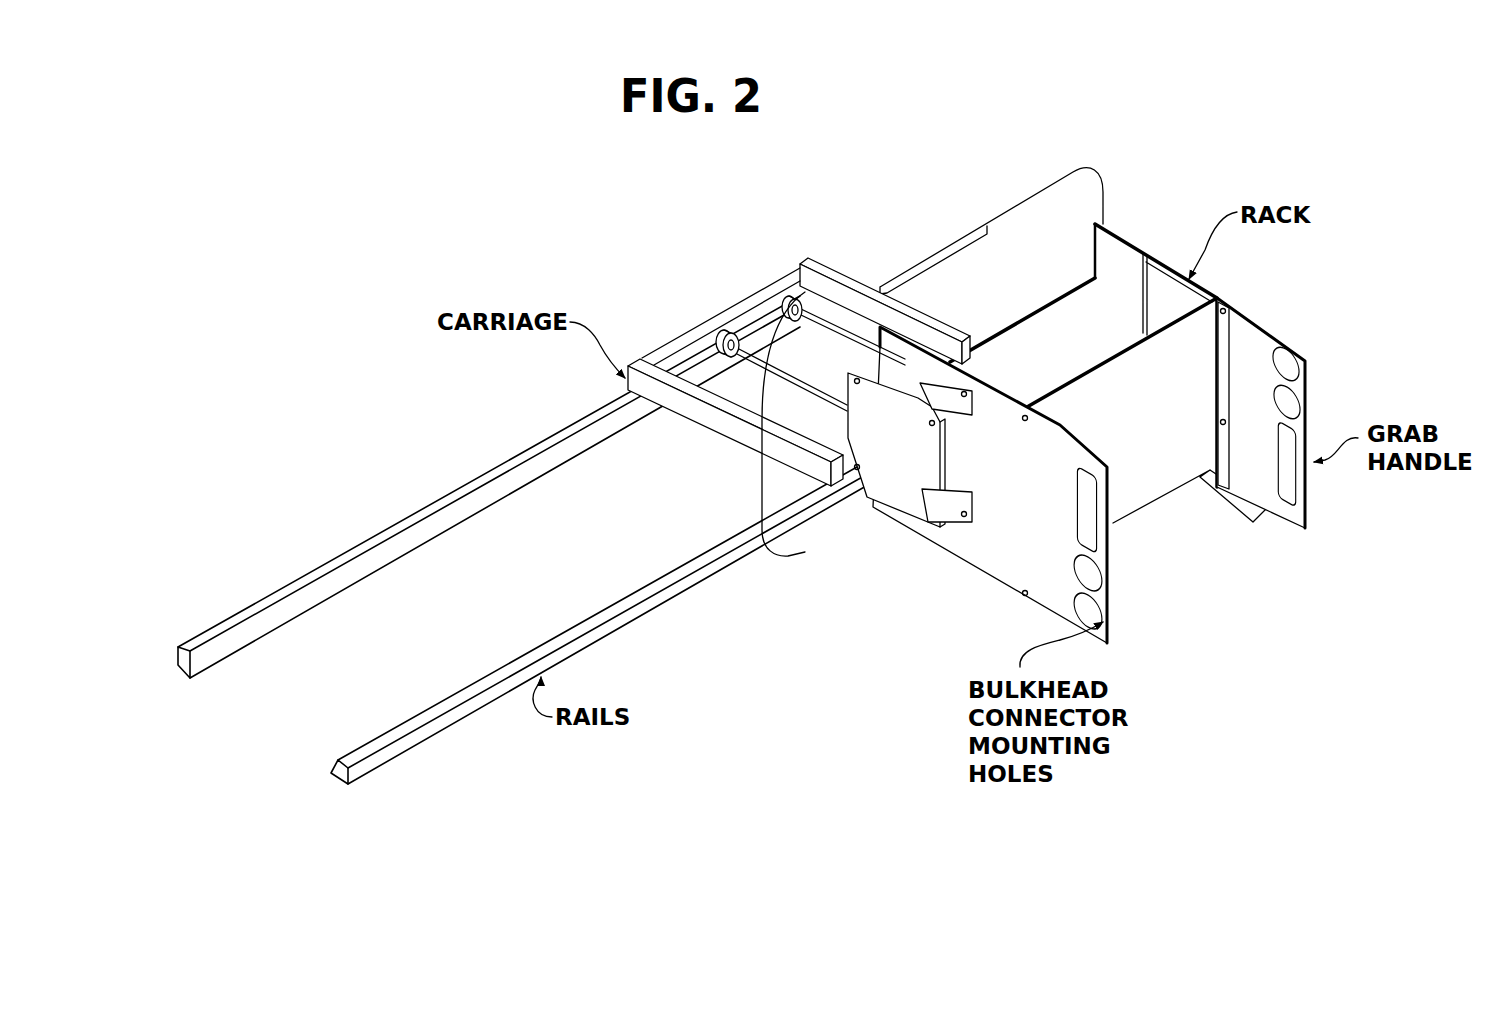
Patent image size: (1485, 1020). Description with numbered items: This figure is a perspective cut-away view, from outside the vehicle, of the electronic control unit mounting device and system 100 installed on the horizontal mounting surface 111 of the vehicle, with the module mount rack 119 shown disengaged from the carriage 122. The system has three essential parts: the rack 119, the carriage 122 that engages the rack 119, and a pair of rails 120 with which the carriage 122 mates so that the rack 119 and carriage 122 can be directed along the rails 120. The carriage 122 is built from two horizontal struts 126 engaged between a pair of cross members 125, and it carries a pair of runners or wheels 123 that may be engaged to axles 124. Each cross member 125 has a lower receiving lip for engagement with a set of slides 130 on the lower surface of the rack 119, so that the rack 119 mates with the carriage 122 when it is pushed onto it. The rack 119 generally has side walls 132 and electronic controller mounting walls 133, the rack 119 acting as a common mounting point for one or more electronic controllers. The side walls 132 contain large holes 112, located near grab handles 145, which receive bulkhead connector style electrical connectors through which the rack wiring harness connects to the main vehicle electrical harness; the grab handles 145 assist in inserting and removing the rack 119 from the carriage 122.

The test system assembly 100 is at (1081, 166).
The horizontal mounting surface 111 is at (540, 591).
The large holes 112 is at (1116, 617).
The module mount rack 119 is at (1245, 303).
The rails 120 is at (472, 479).
The carriage 122 is at (830, 265).
The runners or wheels 123 is at (716, 335).
The axles 124 is at (767, 352).
The cross members 125 is at (856, 280).
The horizontal struts 126 is at (670, 356).
The slides 130 is at (1238, 520).
The side walls 132 is at (1288, 336).
The mounting walls 133 is at (1062, 298).
The grab handles 145 is at (1314, 486).